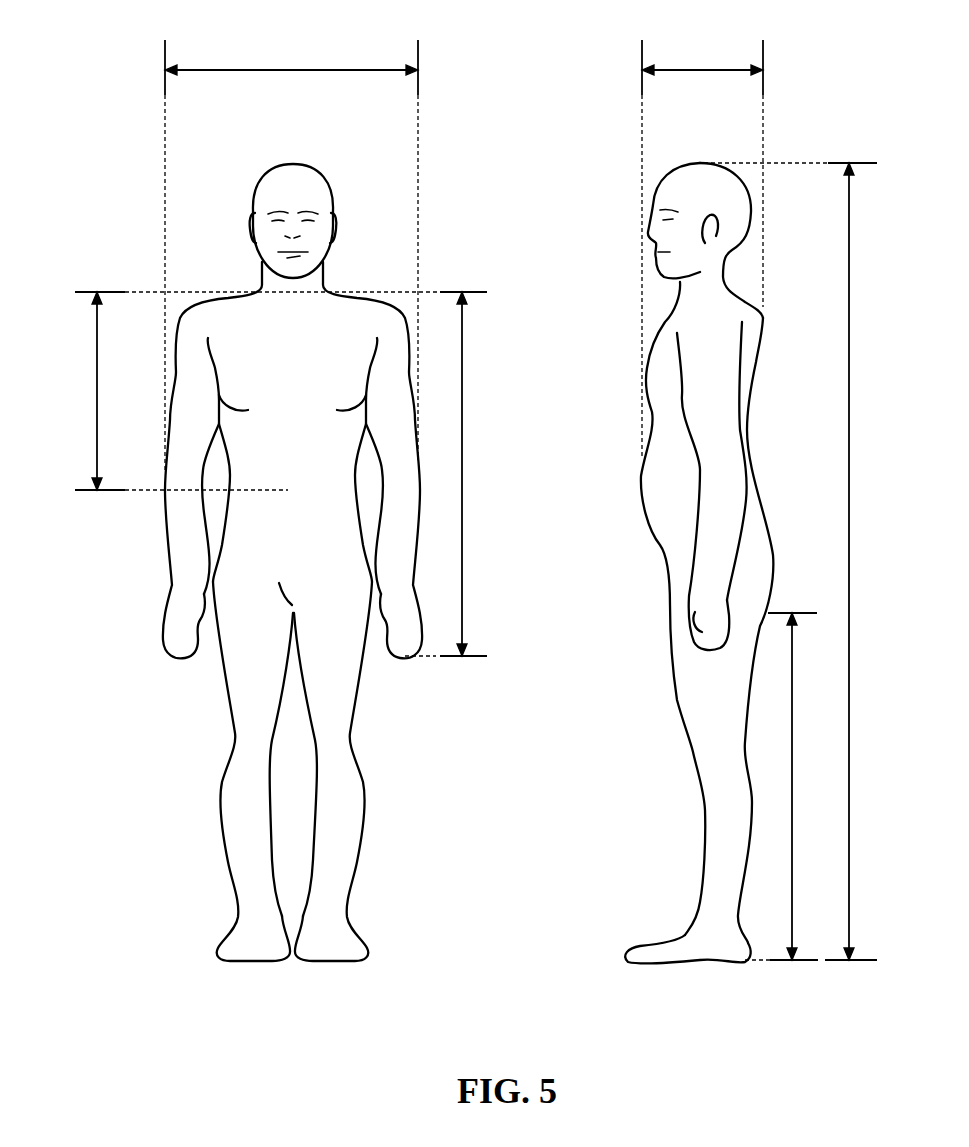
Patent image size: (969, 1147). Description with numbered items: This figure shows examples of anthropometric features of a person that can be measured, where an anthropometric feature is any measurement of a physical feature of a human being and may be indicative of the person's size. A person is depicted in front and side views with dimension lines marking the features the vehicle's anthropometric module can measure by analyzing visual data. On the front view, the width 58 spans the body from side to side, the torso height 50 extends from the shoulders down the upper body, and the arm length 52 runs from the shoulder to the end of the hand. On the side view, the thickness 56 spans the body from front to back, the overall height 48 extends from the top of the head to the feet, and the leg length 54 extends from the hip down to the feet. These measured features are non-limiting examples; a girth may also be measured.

The overall height 48 is at (849, 498).
The torso height 50 is at (97, 421).
The arm length 52 is at (462, 507).
The leg length 54 is at (792, 790).
The thickness 56 is at (704, 70).
The width 58 is at (286, 70).